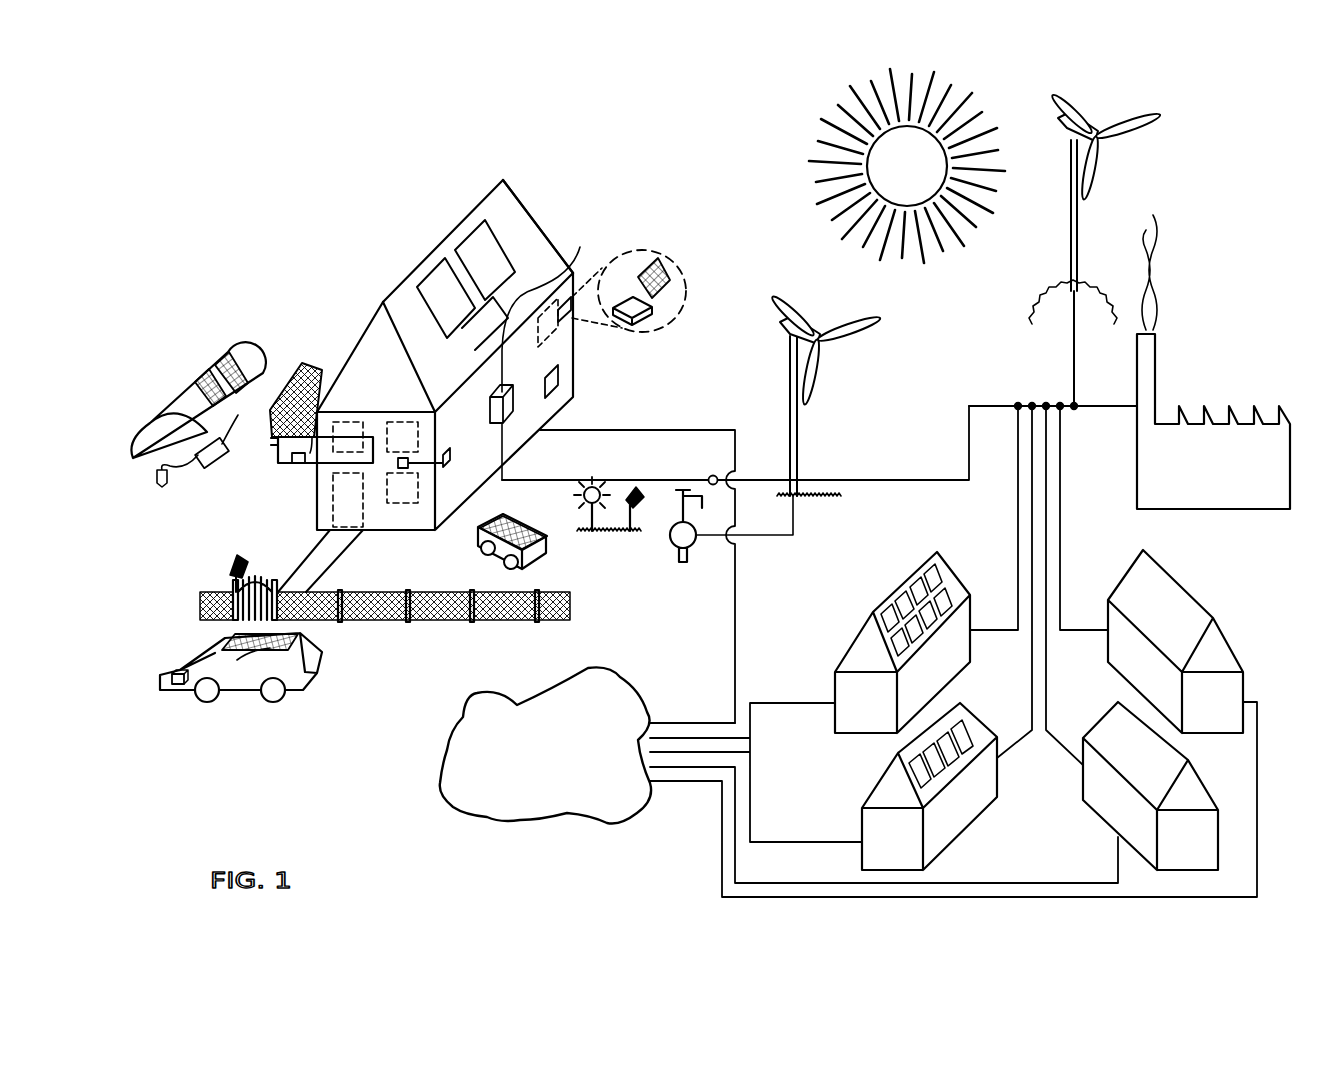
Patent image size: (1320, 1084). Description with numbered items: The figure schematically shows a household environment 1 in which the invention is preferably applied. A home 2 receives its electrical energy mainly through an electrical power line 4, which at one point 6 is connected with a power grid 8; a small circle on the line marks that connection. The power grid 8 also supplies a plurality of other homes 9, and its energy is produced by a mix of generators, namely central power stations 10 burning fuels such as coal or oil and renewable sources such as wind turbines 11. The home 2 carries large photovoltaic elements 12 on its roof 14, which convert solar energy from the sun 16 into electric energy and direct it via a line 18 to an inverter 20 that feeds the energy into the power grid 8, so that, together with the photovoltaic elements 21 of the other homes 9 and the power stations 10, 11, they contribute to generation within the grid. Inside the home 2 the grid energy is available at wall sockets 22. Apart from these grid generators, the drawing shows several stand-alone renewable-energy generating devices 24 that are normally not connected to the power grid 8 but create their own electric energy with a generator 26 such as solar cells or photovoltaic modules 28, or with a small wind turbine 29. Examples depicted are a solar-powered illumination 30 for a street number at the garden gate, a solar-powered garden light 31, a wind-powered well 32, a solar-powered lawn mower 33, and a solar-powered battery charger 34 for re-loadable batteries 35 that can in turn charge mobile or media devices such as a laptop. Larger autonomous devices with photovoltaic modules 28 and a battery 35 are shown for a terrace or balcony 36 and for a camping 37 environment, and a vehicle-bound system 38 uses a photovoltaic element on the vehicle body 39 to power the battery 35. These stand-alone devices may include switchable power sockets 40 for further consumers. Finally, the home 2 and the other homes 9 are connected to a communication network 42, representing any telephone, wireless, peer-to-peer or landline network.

The household environment 1 is at (345, 187).
The home 2 is at (361, 304).
The electrical power line 4 is at (587, 485).
The connection point 6 is at (712, 474).
The power grid 8 is at (1027, 394).
The homes 9 is at (823, 797).
The central power station 10 is at (1224, 393).
The wind turbine 11 is at (1105, 119).
The photovoltaic elements 12 is at (461, 221).
The roof 14 is at (523, 228).
The sun 16 is at (920, 176).
The line 18 is at (549, 307).
The inverter 20 is at (513, 425).
The photovoltaic elements of other homes 21 is at (912, 583).
The wall sockets 22 is at (402, 470).
The stand-alone renewable-energy generating devices 24 is at (493, 481).
The generator 26 is at (470, 447).
The photovoltaic modules 28 is at (248, 352).
The small wind turbine 29 is at (823, 321).
The solar-powered illumination for street numbers 30 is at (231, 552).
The solar-powered garden light 31 is at (633, 540).
The wind-powered well 32 is at (780, 543).
The solar-powered lawn mower 33 is at (552, 546).
The solar-powered battery charger 34 is at (637, 268).
The battery 35 is at (226, 458).
The terrace or balcony 36 is at (289, 356).
The camping environment 37 is at (195, 356).
The vehicle-bound system 38 is at (210, 641).
The vehicle body 39 is at (272, 692).
The switchable power sockets 40 is at (160, 486).
The communication network 42 is at (561, 760).